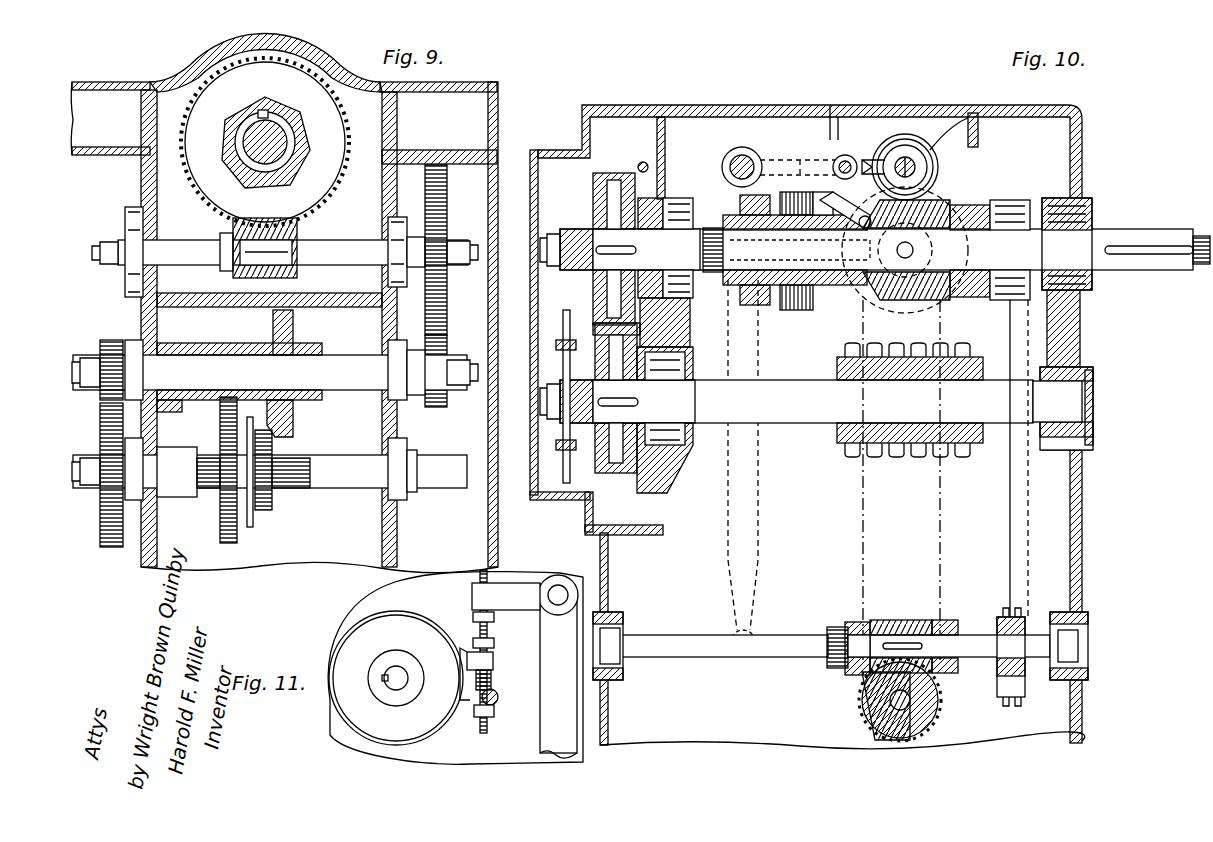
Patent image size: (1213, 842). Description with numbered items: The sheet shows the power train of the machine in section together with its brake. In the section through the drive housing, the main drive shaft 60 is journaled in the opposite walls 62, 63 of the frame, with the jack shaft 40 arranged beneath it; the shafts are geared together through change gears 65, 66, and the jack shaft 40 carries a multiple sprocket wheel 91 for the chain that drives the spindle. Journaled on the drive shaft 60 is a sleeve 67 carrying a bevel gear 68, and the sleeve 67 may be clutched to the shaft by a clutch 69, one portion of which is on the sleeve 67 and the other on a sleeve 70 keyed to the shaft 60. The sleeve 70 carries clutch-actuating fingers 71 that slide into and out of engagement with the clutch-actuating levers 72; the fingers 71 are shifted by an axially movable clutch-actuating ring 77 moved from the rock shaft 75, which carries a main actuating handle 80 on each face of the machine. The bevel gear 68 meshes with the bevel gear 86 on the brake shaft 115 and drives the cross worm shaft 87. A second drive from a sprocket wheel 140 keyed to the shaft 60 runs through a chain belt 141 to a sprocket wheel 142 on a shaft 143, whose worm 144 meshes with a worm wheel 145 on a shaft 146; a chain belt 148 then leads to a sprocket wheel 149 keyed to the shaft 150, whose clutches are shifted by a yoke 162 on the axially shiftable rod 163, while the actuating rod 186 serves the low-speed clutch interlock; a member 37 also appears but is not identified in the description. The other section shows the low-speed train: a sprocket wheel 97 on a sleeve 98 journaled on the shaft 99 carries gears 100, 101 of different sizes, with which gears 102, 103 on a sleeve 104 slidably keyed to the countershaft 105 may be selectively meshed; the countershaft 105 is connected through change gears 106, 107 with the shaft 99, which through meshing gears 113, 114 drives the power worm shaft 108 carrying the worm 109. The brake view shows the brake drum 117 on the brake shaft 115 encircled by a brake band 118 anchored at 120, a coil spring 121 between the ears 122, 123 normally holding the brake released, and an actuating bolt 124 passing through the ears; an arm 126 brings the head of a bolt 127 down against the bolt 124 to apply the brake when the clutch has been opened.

In FIG. 10, the frame plate 37 is at (555, 500).
In FIG. 10, the jack shaft 40 is at (786, 401).
In FIG. 10, the main drive shaft 60 is at (1120, 240).
In FIG. 10, the wall 62 is at (665, 490).
In FIG. 10, the wall 63 is at (1082, 475).
In FIG. 10, the change gear 65 is at (598, 200).
In FIG. 10, the change gear 66 is at (616, 475).
In FIG. 10, the sleeve 67 is at (845, 288).
In FIG. 10, the bevel gear 68 is at (975, 210).
In FIG. 10, the clutch 69 is at (792, 312).
In FIG. 10, the sleeve 70 is at (760, 300).
In FIG. 10, the clutch-actuating fingers 71 is at (720, 215).
In FIG. 10, the clutch-actuating levers 72 is at (800, 190).
In FIG. 10, the rock shaft 75 is at (742, 150).
In FIG. 11, the rock shaft 75 is at (558, 595).
In FIG. 10, the clutch-actuating ring 77 is at (735, 282).
In FIG. 10, the main actuating handle 80 is at (728, 568).
In FIG. 11, the main actuating handle 80 is at (558, 676).
In FIG. 10, the bevel gear 86 is at (922, 300).
In FIG. 9, the cross worm shaft 87 is at (255, 145).
In FIG. 10, the sprocket wheel 91 is at (912, 458).
In FIG. 9, the sprocket wheel 97 is at (170, 405).
In FIG. 9, the sleeve 98 is at (250, 345).
In FIG. 9, the shaft 99 is at (275, 370).
In FIG. 9, the gear 100 is at (205, 175).
In FIG. 9, the gear 101 is at (290, 424).
In FIG. 9, the gear 102 is at (220, 530).
In FIG. 9, the gear 103 is at (272, 505).
In FIG. 9, the sleeve 104 is at (250, 525).
In FIG. 9, the countershaft 105 is at (340, 460).
In FIG. 9, the change gear 106 is at (102, 512).
In FIG. 9, the change gear 107 is at (110, 340).
In FIG. 9, the power worm shaft 108 is at (352, 240).
In FIG. 9, the worm 109 is at (235, 268).
In FIG. 9, the gear 113 is at (436, 408).
In FIG. 9, the gear 114 is at (449, 192).
In FIG. 10, the brake shaft 115 is at (880, 300).
In FIG. 11, the brake drum 117 is at (378, 625).
In FIG. 11, the brake band 118 is at (425, 620).
In FIG. 11, the anchor 120 is at (498, 700).
In FIG. 11, the coil spring 121 is at (492, 678).
In FIG. 11, the brake drum ear 122 is at (460, 700).
In FIG. 11, the brake drum ear 123 is at (467, 660).
In FIG. 11, the actuating bolt 124 is at (484, 733).
In FIG. 10, the arm 126 is at (800, 160).
In FIG. 11, the arm 126 is at (506, 597).
In FIG. 11, the bolt 127 is at (494, 618).
In FIG. 10, the sprocket wheel 140 is at (1000, 300).
In FIG. 10, the chain belt 141 is at (1010, 496).
In FIG. 10, the sprocket wheel 142 is at (1020, 612).
In FIG. 10, the shaft 143 is at (967, 640).
In FIG. 10, the worm 144 is at (900, 620).
In FIG. 10, the worm wheel 145 is at (862, 705).
In FIG. 10, the shaft 146 is at (935, 710).
In FIG. 10, the chain belt 148 is at (865, 565).
In FIG. 10, the sprocket wheel 149 is at (940, 150).
In FIG. 10, the shaft 150 is at (915, 165).
In FIG. 10, the yoke 162 is at (900, 150).
In FIG. 10, the rod 163 is at (845, 155).
In FIG. 10, the actuating rod 186 is at (643, 162).